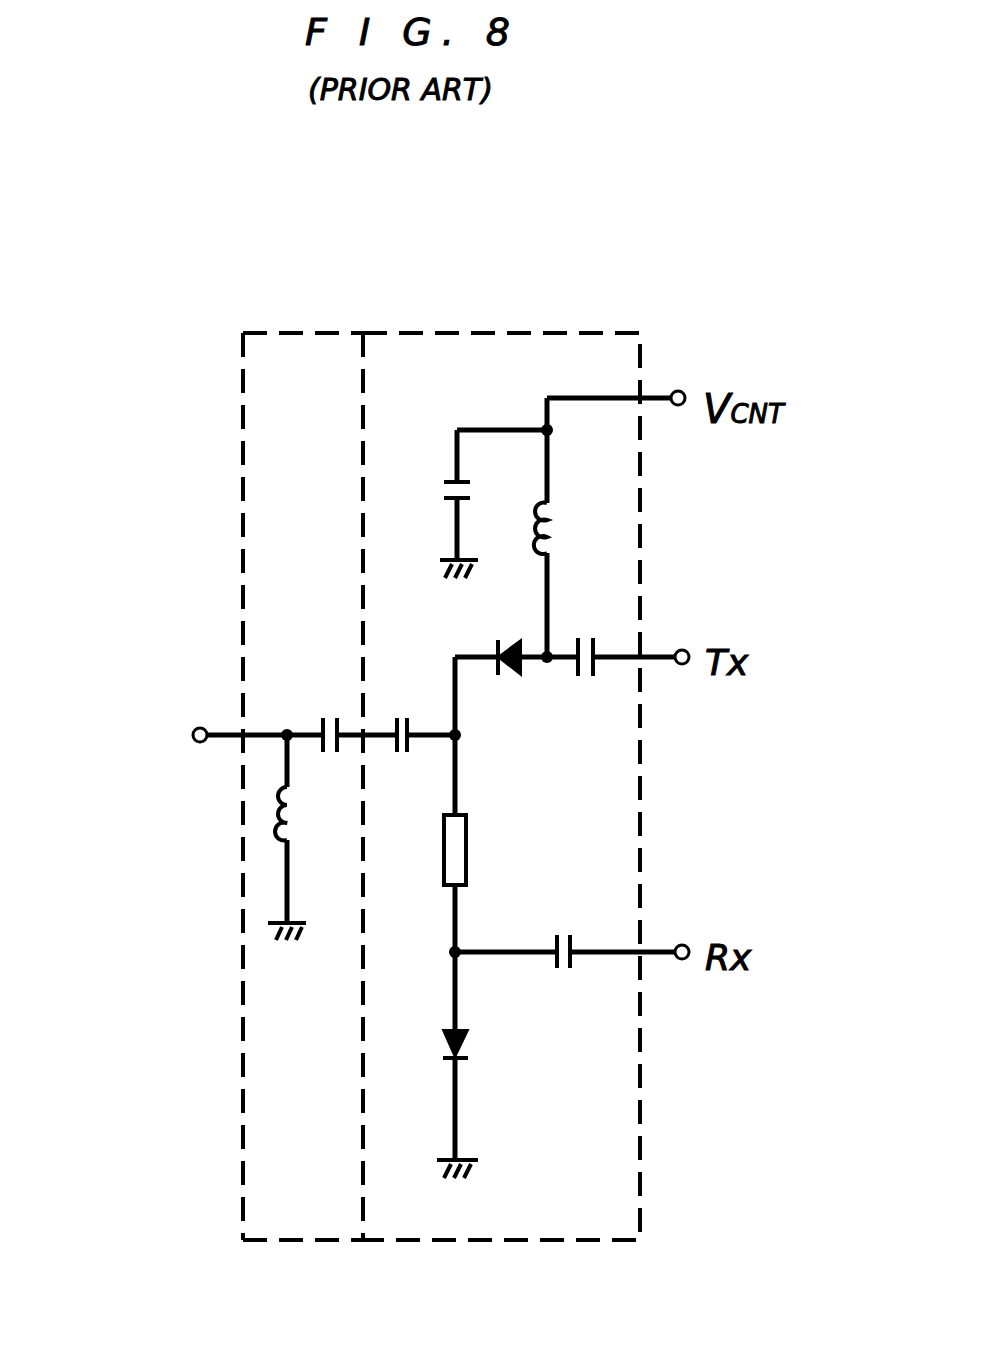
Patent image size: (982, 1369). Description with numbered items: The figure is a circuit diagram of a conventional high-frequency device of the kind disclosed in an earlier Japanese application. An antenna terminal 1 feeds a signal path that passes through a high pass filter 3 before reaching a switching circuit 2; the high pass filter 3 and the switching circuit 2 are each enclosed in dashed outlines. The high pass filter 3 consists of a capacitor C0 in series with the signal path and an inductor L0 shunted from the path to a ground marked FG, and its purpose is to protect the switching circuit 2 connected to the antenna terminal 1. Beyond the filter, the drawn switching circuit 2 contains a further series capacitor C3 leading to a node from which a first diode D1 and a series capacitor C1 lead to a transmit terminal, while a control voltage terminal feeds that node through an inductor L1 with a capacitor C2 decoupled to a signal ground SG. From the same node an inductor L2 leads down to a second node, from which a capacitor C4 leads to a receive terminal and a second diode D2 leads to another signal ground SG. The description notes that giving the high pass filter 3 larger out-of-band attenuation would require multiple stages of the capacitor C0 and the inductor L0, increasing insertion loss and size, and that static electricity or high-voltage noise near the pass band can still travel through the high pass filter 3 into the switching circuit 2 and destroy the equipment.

The antenna terminal 1 is at (196, 720).
The switching circuit 2 is at (549, 330).
The high pass filter 3 is at (266, 333).
The capacitor C0 is at (328, 717).
The capacitor C1 is at (589, 678).
The capacitor C2 is at (443, 490).
The capacitor C3 is at (401, 710).
The capacitor C4 is at (567, 970).
The diode D1 is at (512, 683).
The diode D2 is at (472, 1050).
The inductor L0 is at (268, 823).
The inductor L1 is at (565, 530).
The inductor L2 is at (440, 877).
The signal ground SG is at (437, 572).
The frame ground FG is at (268, 950).